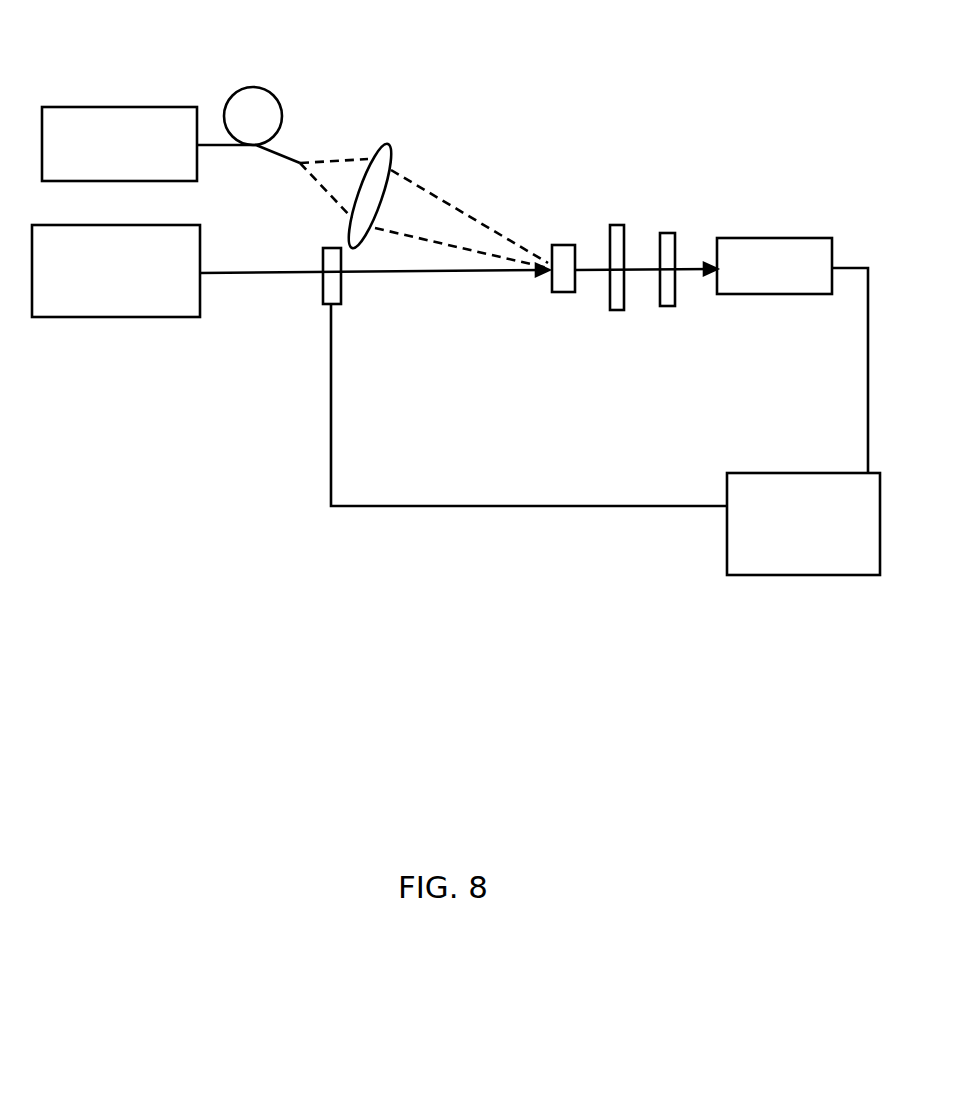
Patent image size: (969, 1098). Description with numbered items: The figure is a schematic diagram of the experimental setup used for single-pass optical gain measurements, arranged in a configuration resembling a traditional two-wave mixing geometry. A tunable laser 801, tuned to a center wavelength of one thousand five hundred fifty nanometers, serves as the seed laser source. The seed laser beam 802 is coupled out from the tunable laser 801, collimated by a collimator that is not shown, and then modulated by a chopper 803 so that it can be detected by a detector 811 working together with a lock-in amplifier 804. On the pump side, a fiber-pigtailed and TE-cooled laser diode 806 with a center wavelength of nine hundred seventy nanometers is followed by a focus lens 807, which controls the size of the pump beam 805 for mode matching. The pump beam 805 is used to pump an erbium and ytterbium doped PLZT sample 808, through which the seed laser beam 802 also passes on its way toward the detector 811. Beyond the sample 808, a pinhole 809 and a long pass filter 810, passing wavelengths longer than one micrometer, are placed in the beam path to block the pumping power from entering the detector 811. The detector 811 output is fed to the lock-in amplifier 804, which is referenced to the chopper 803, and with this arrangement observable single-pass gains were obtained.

The tunable laser 801 is at (87, 318).
The seed laser beam 802 is at (233, 276).
The chopper 803 is at (320, 290).
The lock-in amplifier 804 is at (800, 575).
The pump beam 805 is at (455, 205).
The laser diode 806 is at (105, 107).
The focus lens 807 is at (388, 143).
The PLZT sample 808 is at (560, 292).
The pinhole 809 is at (617, 310).
The long pass filter 810 is at (665, 230).
The detector 811 is at (766, 238).